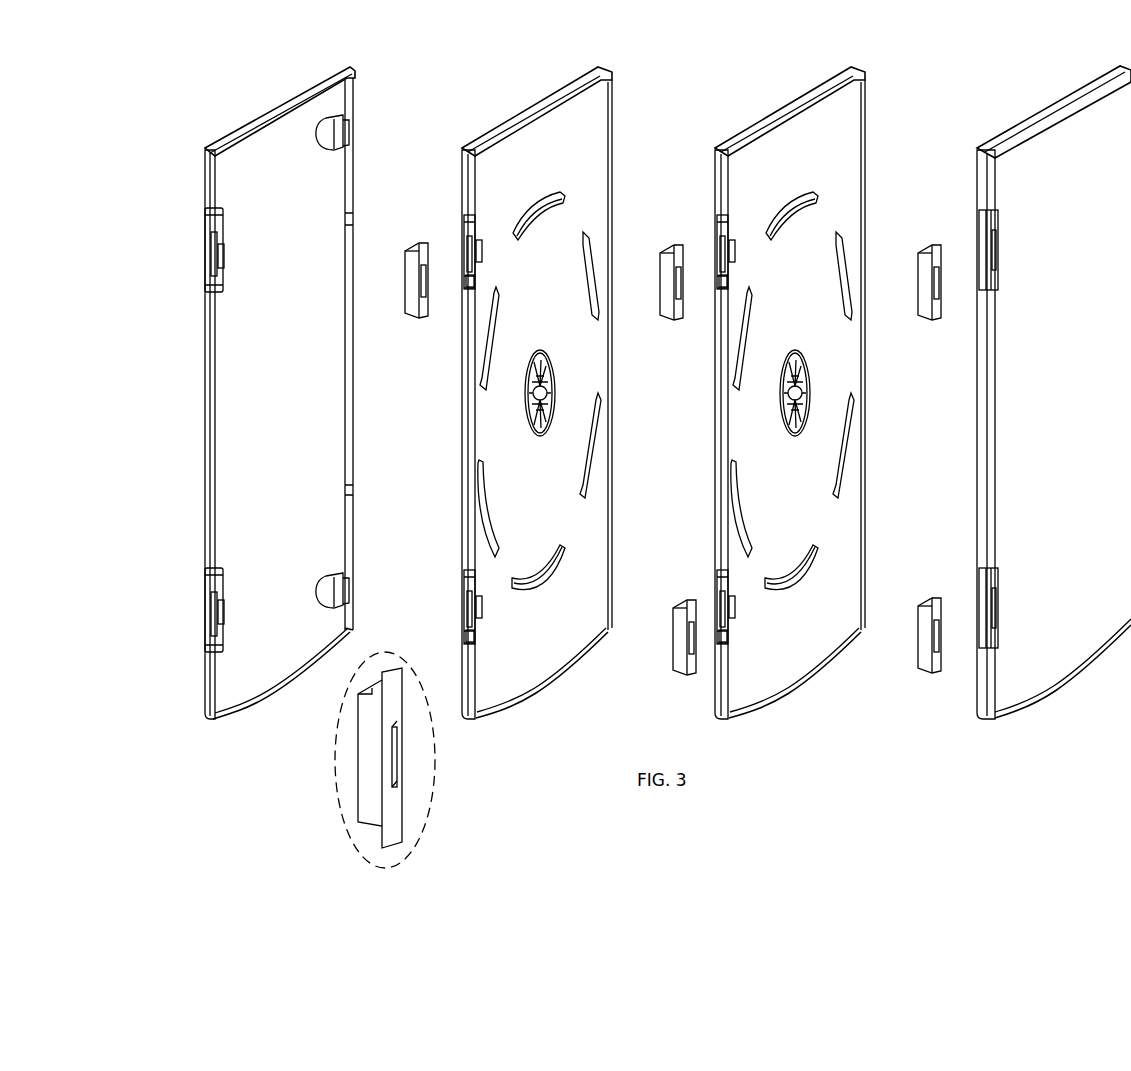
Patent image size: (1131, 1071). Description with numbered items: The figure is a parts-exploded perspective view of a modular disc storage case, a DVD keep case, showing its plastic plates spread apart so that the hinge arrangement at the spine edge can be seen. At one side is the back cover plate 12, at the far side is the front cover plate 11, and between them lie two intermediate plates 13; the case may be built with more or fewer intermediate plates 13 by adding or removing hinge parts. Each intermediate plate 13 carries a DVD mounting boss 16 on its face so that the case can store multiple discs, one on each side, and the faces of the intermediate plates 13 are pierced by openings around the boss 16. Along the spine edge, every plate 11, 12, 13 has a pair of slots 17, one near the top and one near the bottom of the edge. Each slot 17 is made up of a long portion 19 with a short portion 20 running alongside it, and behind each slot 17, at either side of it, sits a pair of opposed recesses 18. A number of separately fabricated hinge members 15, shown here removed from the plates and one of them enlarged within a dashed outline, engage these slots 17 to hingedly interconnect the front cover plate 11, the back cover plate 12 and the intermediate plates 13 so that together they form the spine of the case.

The front cover plate 11 is at (1046, 95).
The back cover plate 12 is at (264, 108).
The intermediate plate 13 is at (552, 86).
The hinge member 15 is at (413, 240).
The DVD mounting boss 16 is at (548, 389).
The slot 17 is at (205, 247).
The recess 18 is at (212, 607).
The long portion 19 is at (465, 287).
The short portion 20 is at (478, 281).